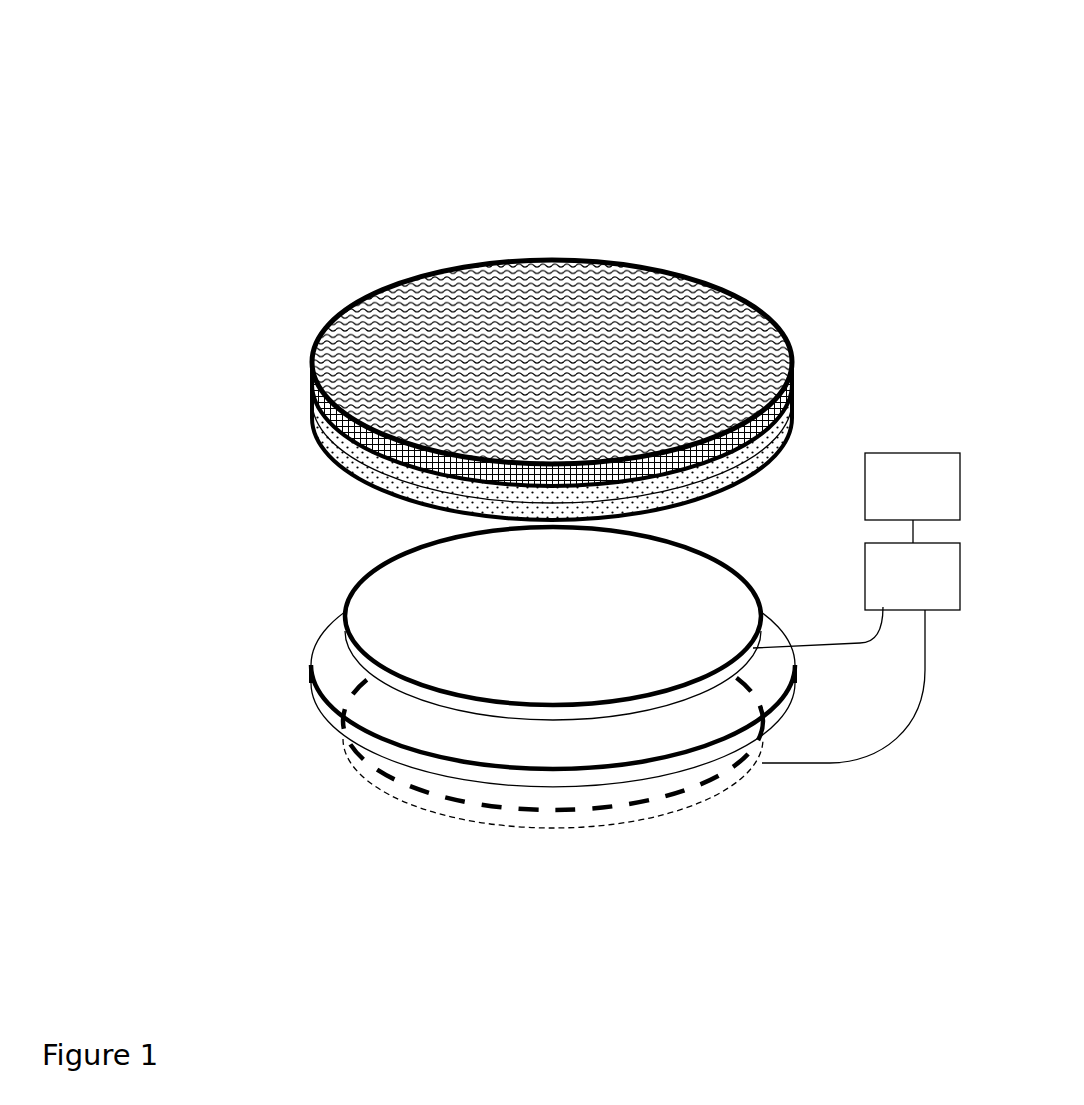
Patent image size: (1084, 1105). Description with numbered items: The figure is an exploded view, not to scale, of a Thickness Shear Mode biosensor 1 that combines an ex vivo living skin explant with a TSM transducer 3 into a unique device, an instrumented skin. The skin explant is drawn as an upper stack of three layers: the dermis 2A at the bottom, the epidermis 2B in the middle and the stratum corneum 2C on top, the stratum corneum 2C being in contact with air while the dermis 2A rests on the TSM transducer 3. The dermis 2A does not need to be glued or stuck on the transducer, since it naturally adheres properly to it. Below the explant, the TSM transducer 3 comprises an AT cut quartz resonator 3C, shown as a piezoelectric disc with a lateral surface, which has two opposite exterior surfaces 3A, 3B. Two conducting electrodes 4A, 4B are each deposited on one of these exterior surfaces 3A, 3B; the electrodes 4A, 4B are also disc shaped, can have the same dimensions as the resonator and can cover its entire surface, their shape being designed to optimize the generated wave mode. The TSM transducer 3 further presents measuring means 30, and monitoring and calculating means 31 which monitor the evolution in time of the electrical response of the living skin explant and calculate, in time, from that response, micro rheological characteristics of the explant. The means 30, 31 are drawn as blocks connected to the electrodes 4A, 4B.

The TSM biosensor 1 is at (575, 229).
The dermis 2A is at (316, 449).
The epidermis 2B is at (309, 412).
The stratum corneum 2C is at (308, 365).
The TSM transducer 3 is at (147, 487).
The exterior surface 3A is at (333, 657).
The exterior surface 3B is at (317, 707).
The AT cut quartz resonator 3C is at (313, 688).
The conducting electrode 4A is at (351, 572).
The conducting electrode 4B is at (351, 776).
The measuring means 30 is at (856, 653).
The monitoring and calculating means 31 is at (912, 498).